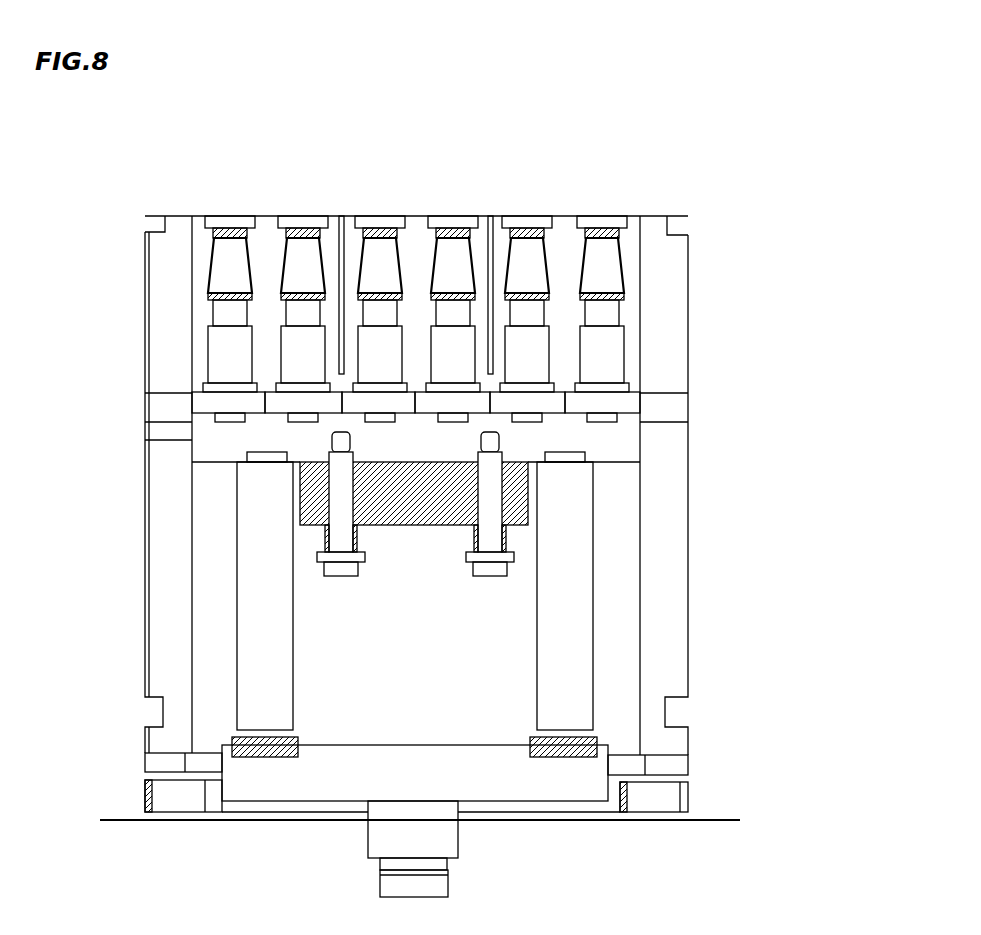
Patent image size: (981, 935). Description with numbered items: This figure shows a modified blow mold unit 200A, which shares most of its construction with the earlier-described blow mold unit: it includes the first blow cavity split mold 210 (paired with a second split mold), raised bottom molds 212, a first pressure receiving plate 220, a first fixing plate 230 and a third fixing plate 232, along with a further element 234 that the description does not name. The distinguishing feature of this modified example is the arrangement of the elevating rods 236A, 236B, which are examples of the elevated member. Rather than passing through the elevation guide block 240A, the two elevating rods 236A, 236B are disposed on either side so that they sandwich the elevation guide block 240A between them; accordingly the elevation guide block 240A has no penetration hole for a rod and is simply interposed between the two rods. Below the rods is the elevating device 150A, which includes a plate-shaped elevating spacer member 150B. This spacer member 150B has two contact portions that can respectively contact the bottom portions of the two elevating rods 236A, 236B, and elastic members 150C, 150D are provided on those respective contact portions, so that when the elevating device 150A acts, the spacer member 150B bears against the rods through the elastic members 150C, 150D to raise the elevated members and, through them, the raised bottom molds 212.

The blow mold unit 200A is at (755, 268).
The first blow cavity split mold 210 is at (563, 243).
The raised bottom mold 212 is at (230, 320).
The first pressure receiving plate 220 is at (673, 363).
The first fixing plate 230 is at (205, 662).
The third fixing plate 232 is at (215, 443).
The fastening pin 234 is at (493, 495).
The elevating rod 236A is at (268, 602).
The elevating rod 236B is at (558, 598).
The elevation guide block 240A is at (385, 513).
The elevating device 150A is at (427, 838).
The plate-shaped elevating spacer member 150B is at (325, 778).
The elastic member 150C is at (232, 757).
The elastic member 150D is at (565, 758).